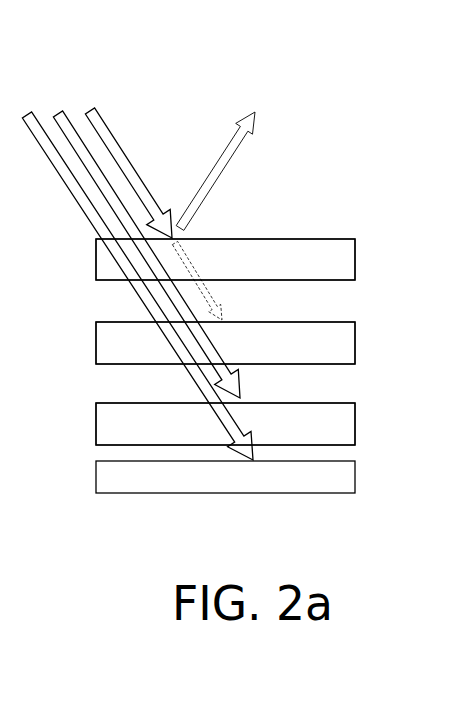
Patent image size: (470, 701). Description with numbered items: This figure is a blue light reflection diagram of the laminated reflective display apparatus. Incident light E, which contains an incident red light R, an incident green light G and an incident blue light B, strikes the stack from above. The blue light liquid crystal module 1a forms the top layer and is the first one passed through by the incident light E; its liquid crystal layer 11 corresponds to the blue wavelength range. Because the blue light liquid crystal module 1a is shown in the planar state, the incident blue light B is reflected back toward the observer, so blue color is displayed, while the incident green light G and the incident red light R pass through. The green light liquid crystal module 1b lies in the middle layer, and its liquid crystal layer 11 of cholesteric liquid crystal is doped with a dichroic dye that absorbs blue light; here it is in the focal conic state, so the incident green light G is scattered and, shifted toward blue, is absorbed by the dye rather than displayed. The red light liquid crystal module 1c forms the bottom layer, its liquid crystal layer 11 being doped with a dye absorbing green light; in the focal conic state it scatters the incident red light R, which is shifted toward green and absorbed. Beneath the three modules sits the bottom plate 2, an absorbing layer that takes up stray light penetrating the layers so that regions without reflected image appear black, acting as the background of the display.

The blue light liquid crystal module 1a is at (68, 264).
The green light liquid crystal module 1b is at (68, 347).
The red light liquid crystal module 1c is at (68, 429).
The bottom plate 2 is at (108, 507).
The liquid crystal layer 11 is at (356, 259).
The incident light E is at (7, 80).
The incident red light R is at (135, 268).
The incident green light G is at (146, 237).
The incident blue light B is at (128, 157).